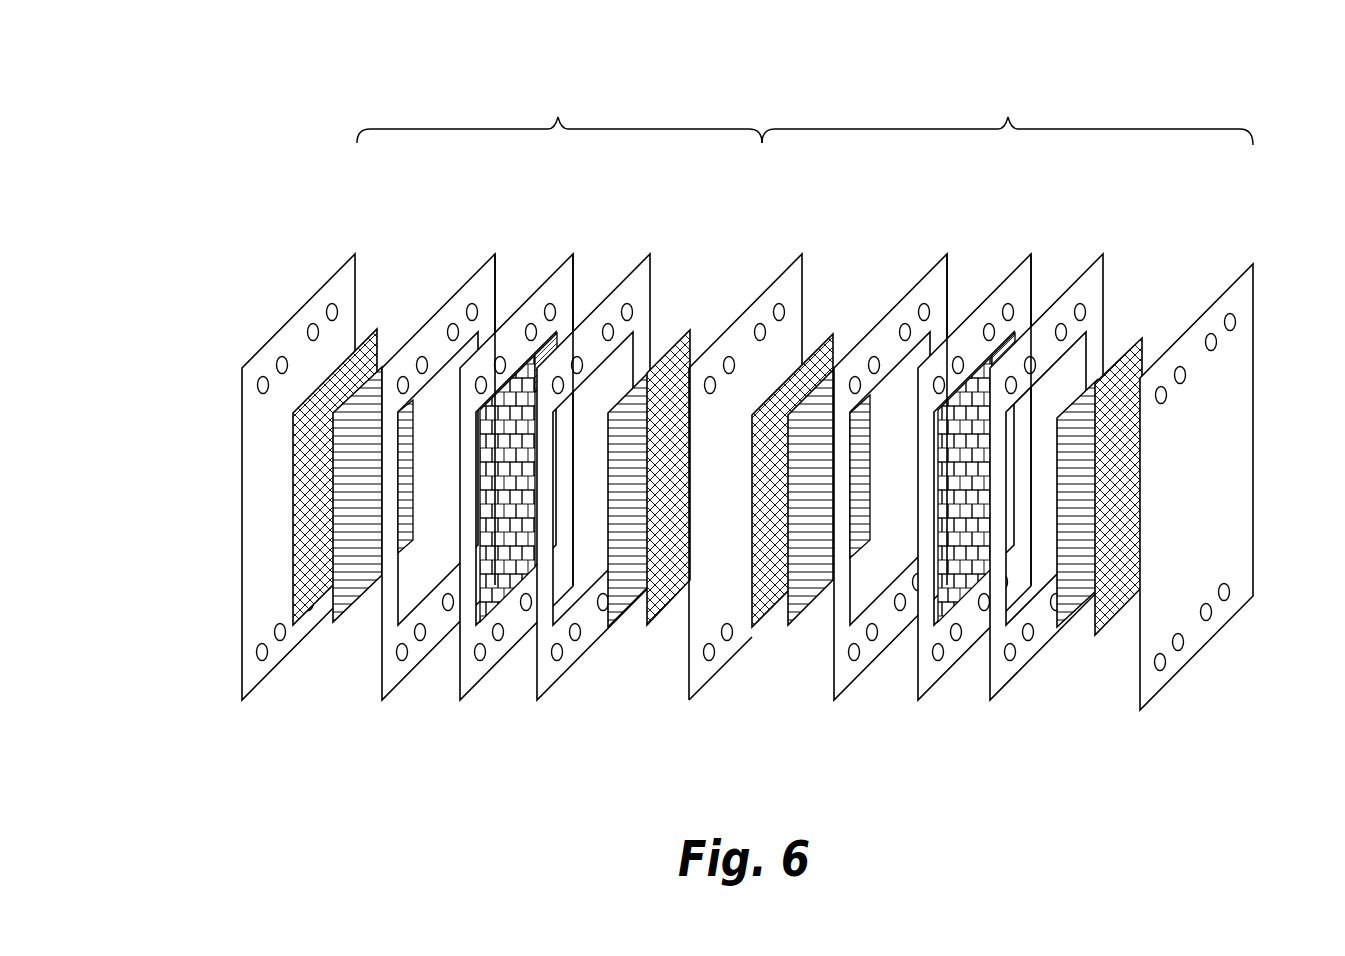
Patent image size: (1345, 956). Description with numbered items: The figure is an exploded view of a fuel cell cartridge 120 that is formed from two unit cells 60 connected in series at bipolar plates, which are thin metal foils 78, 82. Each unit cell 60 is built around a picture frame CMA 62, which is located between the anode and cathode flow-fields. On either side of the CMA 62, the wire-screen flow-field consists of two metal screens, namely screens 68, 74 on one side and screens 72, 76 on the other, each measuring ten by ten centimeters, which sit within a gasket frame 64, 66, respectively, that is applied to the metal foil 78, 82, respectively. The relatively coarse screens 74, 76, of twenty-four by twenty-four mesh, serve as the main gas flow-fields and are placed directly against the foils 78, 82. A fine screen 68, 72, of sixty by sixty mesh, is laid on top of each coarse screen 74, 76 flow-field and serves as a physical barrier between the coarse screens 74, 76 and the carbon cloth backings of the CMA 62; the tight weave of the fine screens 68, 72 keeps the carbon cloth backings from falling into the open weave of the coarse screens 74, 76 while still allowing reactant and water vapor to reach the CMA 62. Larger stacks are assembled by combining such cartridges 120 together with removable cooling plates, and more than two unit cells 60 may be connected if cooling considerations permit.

The cartridge 120 is at (760, 70).
The unit cell 60 is at (805, 114).
The metal foil 78 is at (242, 424).
The metal foil 82 is at (758, 290).
The coarse screen 74 is at (368, 335).
The fine screen 68 is at (340, 618).
The gasket frame 64 is at (490, 258).
The picture frame CMA 62 is at (568, 256).
The gasket frame 66 is at (645, 256).
The fine screen 72 is at (617, 617).
The coarse screen 76 is at (652, 620).